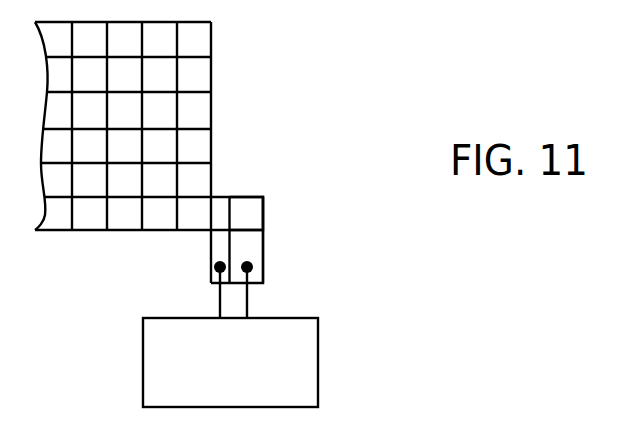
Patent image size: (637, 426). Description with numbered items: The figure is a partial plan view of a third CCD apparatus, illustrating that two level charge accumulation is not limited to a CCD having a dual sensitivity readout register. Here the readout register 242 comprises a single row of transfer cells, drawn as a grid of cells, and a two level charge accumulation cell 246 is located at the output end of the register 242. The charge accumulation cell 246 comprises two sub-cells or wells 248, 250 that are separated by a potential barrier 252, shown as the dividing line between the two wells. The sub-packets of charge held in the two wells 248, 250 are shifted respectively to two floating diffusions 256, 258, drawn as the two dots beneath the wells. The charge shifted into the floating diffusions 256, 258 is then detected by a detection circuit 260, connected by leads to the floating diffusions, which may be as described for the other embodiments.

The readout register 242 is at (82, 220).
The two level charge accumulation cell 246 is at (253, 226).
The sub-cell or well 248 is at (218, 208).
The sub-cell or well 250 is at (245, 215).
The potential barrier 252 is at (230, 215).
The floating diffusion 256 is at (219, 248).
The floating diffusion 258 is at (247, 250).
The detection circuit 260 is at (297, 318).